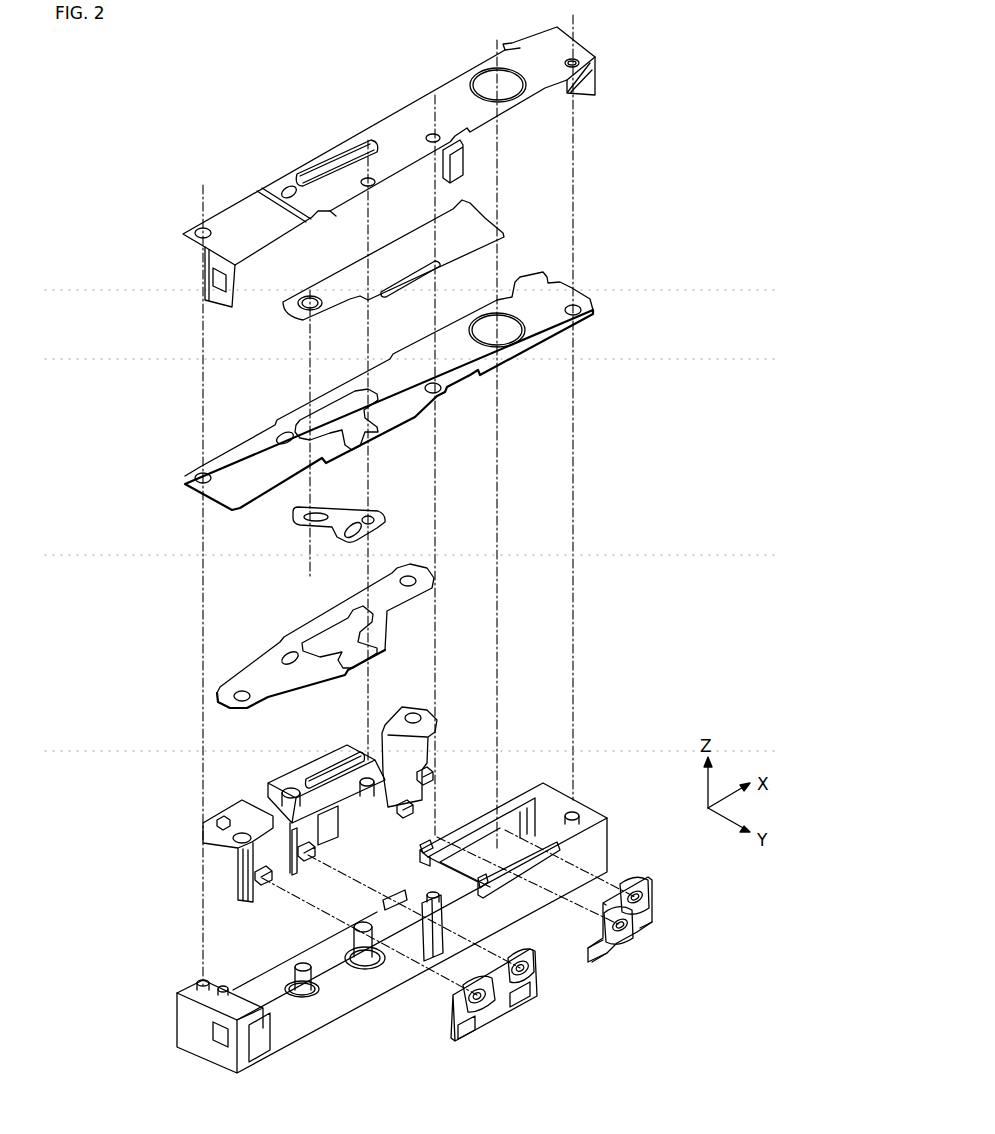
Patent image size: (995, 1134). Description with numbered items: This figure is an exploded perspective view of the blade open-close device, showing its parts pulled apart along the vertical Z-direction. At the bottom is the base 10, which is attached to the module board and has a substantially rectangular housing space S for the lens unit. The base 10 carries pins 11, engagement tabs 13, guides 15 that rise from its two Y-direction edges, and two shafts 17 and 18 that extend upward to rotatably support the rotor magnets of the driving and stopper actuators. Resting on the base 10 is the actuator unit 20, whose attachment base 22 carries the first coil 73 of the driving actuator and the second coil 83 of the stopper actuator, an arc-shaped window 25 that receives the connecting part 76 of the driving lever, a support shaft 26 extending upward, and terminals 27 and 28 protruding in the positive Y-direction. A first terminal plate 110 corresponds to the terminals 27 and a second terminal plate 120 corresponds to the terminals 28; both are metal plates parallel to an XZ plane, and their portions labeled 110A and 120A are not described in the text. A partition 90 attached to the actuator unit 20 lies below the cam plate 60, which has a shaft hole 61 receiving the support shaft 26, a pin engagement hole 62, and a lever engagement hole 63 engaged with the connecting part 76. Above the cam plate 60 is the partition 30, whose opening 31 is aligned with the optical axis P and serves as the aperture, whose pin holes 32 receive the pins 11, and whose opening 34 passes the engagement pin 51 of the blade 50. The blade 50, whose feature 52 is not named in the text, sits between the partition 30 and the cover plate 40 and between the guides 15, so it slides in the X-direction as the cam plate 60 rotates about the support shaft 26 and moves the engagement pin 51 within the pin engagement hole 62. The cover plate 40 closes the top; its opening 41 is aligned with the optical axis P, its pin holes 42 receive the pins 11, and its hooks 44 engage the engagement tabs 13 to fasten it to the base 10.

The base 10 is at (410, 903).
The pins 11 is at (580, 812).
The engagement tabs 13 is at (223, 1033).
The guides 15 is at (468, 812).
The shaft 17 is at (307, 982).
The shaft 18 is at (363, 952).
The actuator unit 20 is at (338, 805).
The attachment base 22 is at (313, 770).
The arc-shaped window 25 is at (340, 763).
The support shaft 26 is at (367, 777).
The terminals 27 is at (303, 857).
The terminals 28 is at (423, 770).
The partition 30 is at (398, 367).
The opening 31 is at (513, 340).
The pin holes 32 is at (585, 307).
The opening 34 is at (343, 397).
The cover plate 40 is at (406, 167).
The opening 41 is at (492, 77).
The pin holes 42 is at (580, 62).
The hooks 44 is at (600, 90).
The blade 50 is at (393, 270).
The engagement pin 51 is at (312, 300).
The slot 52 is at (405, 282).
The cam plate 60 is at (340, 527).
The shaft hole 61 is at (373, 512).
The pin engagement hole 62 is at (303, 525).
The lever engagement hole 63 is at (341, 543).
The coil 73 is at (267, 827).
The connecting part 76 is at (347, 827).
The coil 83 is at (405, 740).
The partition 90 is at (257, 677).
The terminal plate 110 is at (476, 1011).
The terminal tab 110A is at (527, 997).
The terminal plate 120 is at (656, 941).
The terminal tab 120A is at (648, 937).
The optical axis P is at (498, 552).
The housing space S is at (480, 835).